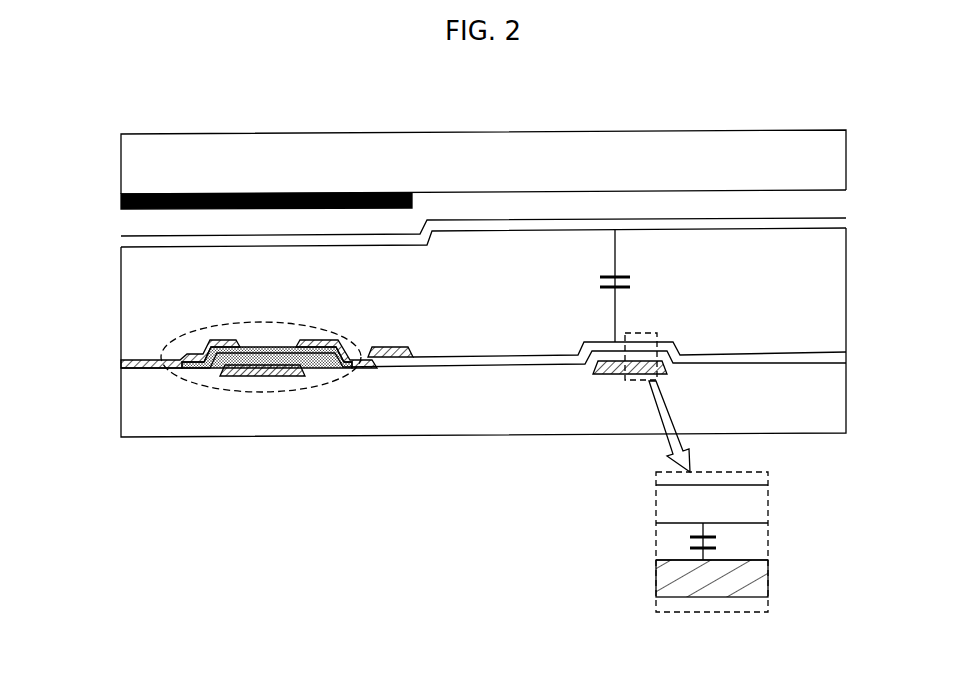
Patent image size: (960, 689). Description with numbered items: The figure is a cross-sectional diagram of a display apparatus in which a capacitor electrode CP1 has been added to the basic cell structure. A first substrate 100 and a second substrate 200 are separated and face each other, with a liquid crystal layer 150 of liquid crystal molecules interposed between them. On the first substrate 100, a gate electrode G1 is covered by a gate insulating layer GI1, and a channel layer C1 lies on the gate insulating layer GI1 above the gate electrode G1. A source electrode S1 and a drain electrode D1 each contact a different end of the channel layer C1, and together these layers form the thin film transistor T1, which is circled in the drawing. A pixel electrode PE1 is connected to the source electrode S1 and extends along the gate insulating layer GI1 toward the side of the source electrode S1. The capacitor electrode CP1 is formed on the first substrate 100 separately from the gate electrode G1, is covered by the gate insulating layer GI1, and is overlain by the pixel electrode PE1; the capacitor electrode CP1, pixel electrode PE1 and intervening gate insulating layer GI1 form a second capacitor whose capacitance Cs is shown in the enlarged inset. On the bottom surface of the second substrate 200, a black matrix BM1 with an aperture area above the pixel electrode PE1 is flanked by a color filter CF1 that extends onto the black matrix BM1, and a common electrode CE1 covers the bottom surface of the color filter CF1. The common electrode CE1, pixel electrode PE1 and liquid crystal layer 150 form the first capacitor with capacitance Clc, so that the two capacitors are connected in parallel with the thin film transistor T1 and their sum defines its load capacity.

The second substrate 200 is at (846, 158).
The first substrate 100 is at (846, 403).
The liquid crystal layer 150 is at (846, 285).
The color filter CF1 is at (846, 200).
The black matrix BM1 is at (120, 203).
The common electrode CE1 is at (846, 225).
The capacitance of the first capacitor Clc is at (630, 285).
The gate insulating layer GI1 is at (318, 358).
The gate electrode G1 is at (258, 370).
The channel layer C1 is at (197, 366).
The drain electrode D1 is at (137, 366).
The source electrode S1 is at (356, 362).
The pixel electrode PE1 is at (846, 357).
The capacitor electrode CP1 is at (607, 376).
The thin film transistor T1 is at (164, 327).
The capacitance of the second capacitor Cs is at (717, 541).